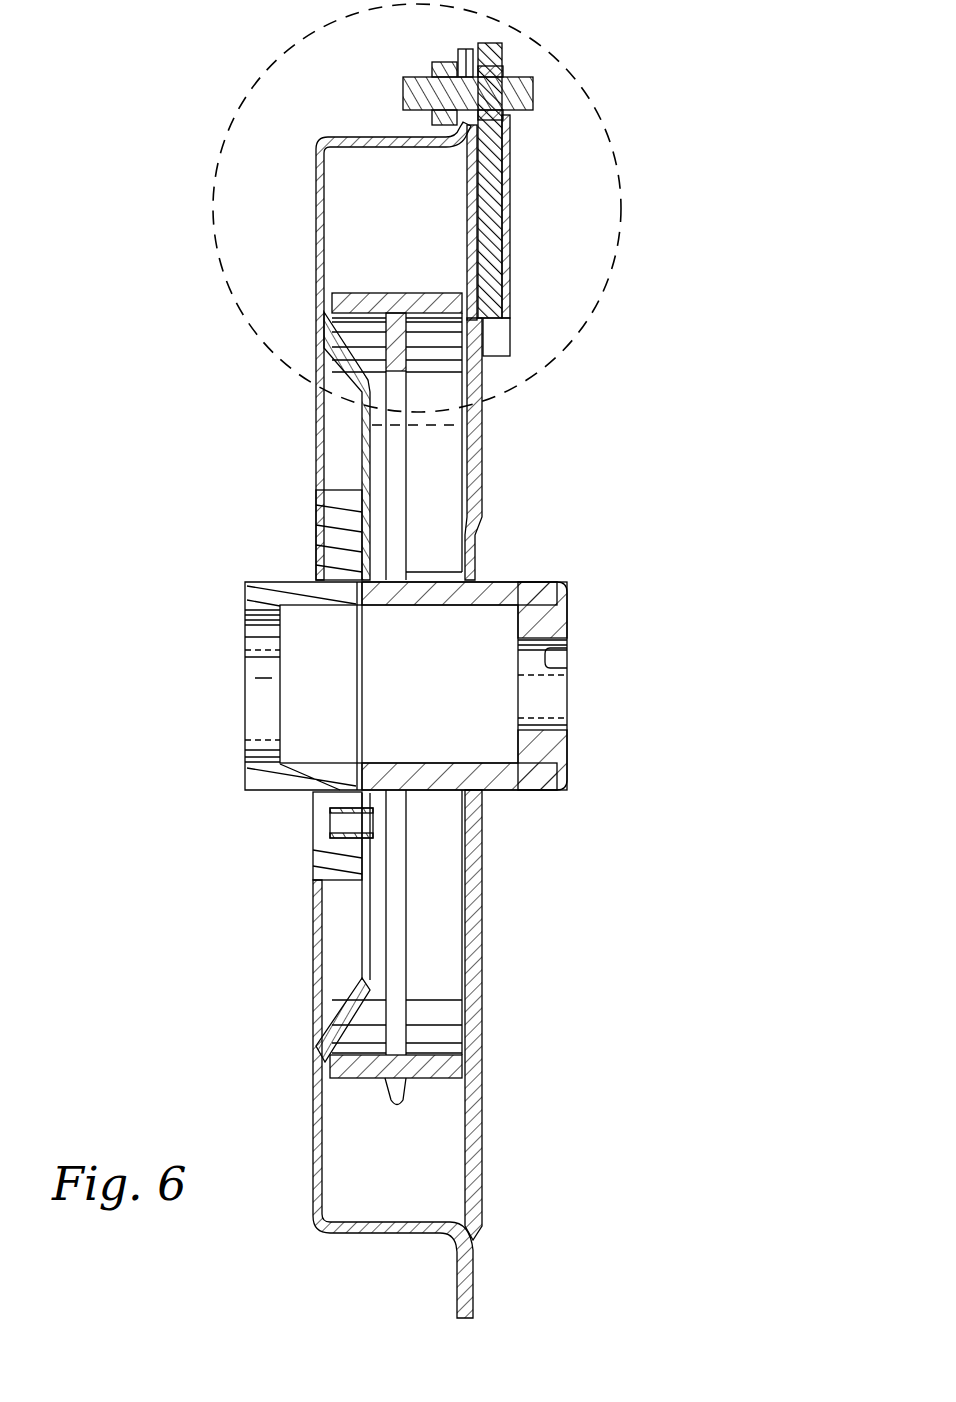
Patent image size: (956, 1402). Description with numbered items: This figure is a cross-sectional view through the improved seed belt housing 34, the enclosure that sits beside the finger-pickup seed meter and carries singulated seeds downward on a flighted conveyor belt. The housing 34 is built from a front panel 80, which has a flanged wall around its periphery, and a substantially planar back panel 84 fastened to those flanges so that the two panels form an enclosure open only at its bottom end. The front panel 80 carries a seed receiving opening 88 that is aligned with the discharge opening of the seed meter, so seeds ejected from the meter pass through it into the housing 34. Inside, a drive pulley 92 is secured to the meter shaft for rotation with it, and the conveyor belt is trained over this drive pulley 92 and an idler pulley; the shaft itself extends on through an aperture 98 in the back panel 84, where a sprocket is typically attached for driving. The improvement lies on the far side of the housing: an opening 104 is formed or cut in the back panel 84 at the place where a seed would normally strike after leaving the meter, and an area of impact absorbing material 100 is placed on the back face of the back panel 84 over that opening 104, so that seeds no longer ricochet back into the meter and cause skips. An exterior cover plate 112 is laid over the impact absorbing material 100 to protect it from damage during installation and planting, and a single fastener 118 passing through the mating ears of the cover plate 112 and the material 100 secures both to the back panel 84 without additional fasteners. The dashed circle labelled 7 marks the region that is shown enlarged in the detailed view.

The detail circle for FIG. 7 is at (618, 158).
The seed belt housing 34 is at (640, 509).
The front panel 80 is at (300, 1108).
The back panel 84 is at (496, 932).
The seed receiving opening 88 is at (316, 210).
The drive pulley 92 is at (368, 292).
The aperture 98 is at (474, 571).
The impact absorbing material 100 is at (498, 182).
The opening 104 is at (468, 170).
The exterior cover plate 112 is at (506, 228).
The fastener 118 is at (520, 108).